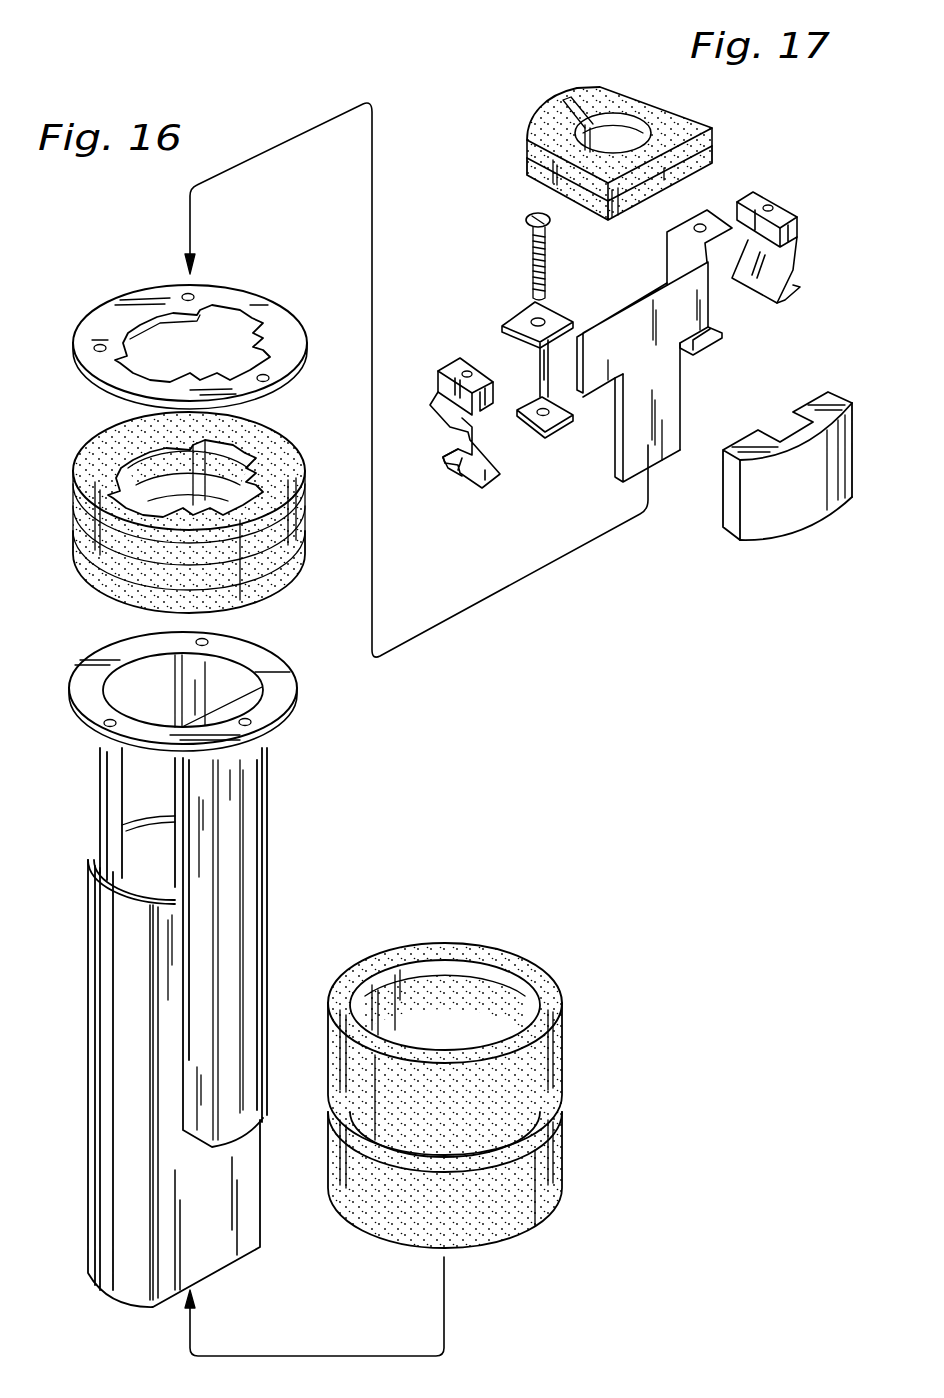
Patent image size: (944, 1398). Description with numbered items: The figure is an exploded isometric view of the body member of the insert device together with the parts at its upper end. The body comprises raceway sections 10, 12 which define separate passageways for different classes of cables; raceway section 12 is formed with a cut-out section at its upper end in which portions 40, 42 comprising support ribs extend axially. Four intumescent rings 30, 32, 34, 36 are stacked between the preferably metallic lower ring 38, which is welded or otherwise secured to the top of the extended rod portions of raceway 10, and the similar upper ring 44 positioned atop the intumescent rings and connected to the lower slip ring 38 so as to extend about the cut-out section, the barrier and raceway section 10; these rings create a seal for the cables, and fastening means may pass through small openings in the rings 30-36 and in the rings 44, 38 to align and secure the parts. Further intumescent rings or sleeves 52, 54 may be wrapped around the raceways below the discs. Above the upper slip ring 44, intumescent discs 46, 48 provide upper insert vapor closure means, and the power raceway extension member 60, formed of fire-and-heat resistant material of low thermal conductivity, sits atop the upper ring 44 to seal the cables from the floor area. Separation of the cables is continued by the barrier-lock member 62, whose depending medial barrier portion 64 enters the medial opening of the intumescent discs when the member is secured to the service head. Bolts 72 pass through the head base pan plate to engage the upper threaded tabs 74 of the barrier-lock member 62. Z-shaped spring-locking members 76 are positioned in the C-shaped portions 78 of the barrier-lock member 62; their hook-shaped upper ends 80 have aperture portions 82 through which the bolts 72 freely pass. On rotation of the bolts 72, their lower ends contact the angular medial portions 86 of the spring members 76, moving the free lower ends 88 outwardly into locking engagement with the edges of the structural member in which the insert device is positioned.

In FIG. 16, the raceway section 10 is at (179, 1027).
In FIG. 16, the raceway section 12 is at (103, 1028).
In FIG. 16, the intumescent ring 30 is at (75, 490).
In FIG. 16, the intumescent ring 32 is at (75, 522).
In FIG. 16, the intumescent ring 34 is at (75, 557).
In FIG. 16, the intumescent ring 36 is at (92, 580).
In FIG. 16, the lower ring 38 is at (277, 697).
In FIG. 16, the support rib 40 is at (108, 787).
In FIG. 16, the support rib 42 is at (182, 700).
In FIG. 16, the upper ring 44 is at (282, 327).
In FIG. 17, the intumescent disc 46 is at (700, 118).
In FIG. 17, the intumescent disc 48 is at (712, 163).
In FIG. 16, the intumescent ring or sleeve 52 is at (563, 1032).
In FIG. 16, the intumescent ring or sleeve 54 is at (537, 1160).
In FIG. 17, the power raceway extension member 60 is at (780, 523).
In FIG. 17, the barrier-lock member 62 is at (643, 353).
In FIG. 17, the medial barrier portion 64 is at (660, 447).
In FIG. 17, the bolt 72 is at (532, 252).
In FIG. 17, the threaded tab 74 is at (538, 310).
In FIG. 17, the Z-shaped spring-locking member 76 is at (629, 327).
In FIG. 17, the C-shaped portion 78 is at (715, 337).
In FIG. 17, the hook-shaped upper end 80 is at (649, 290).
In FIG. 17, the aperture portion 82 is at (458, 367).
In FIG. 17, the angular medial portion 86 is at (480, 452).
In FIG. 17, the free lower end 88 is at (452, 458).